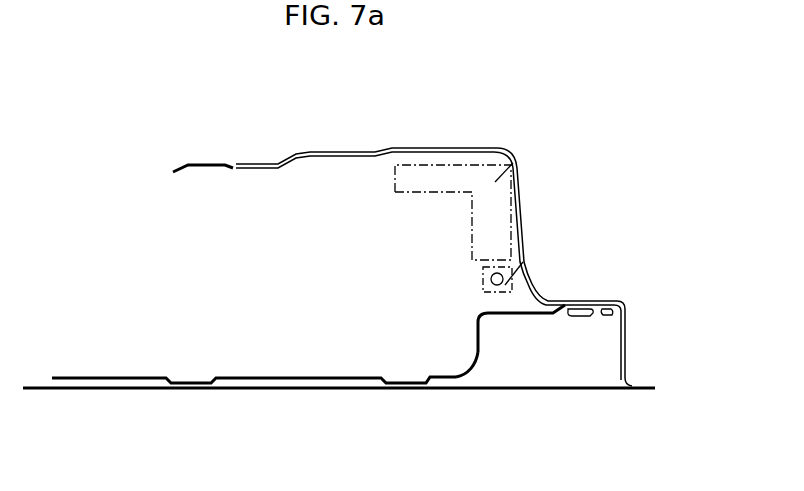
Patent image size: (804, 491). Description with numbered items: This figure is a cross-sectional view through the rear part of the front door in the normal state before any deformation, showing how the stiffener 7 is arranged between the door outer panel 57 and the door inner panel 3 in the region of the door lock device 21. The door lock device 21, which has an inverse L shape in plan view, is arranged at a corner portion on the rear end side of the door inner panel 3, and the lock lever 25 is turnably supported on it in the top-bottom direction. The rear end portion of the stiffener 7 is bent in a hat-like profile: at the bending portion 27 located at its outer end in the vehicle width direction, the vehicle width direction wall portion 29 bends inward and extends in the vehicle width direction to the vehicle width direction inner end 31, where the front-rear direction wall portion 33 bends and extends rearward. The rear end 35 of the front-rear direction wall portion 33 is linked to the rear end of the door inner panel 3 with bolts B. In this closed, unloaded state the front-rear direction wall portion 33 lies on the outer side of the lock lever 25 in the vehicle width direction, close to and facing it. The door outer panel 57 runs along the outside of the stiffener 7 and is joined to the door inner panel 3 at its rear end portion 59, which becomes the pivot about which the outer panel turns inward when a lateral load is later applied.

The door inner panel 3 is at (333, 152).
The door lock device 21 is at (508, 168).
The lock lever 25 is at (527, 262).
The bolts B is at (577, 303).
The stiffener 7 is at (128, 376).
The bending portion 27 is at (467, 371).
The vehicle width direction wall portion 29 is at (482, 340).
The vehicle width direction inner end 31 is at (479, 314).
The front-rear direction wall portion 33 is at (535, 317).
The rear end 35 is at (622, 315).
The door outer panel 57 is at (267, 392).
The rear end portion 59 is at (640, 391).